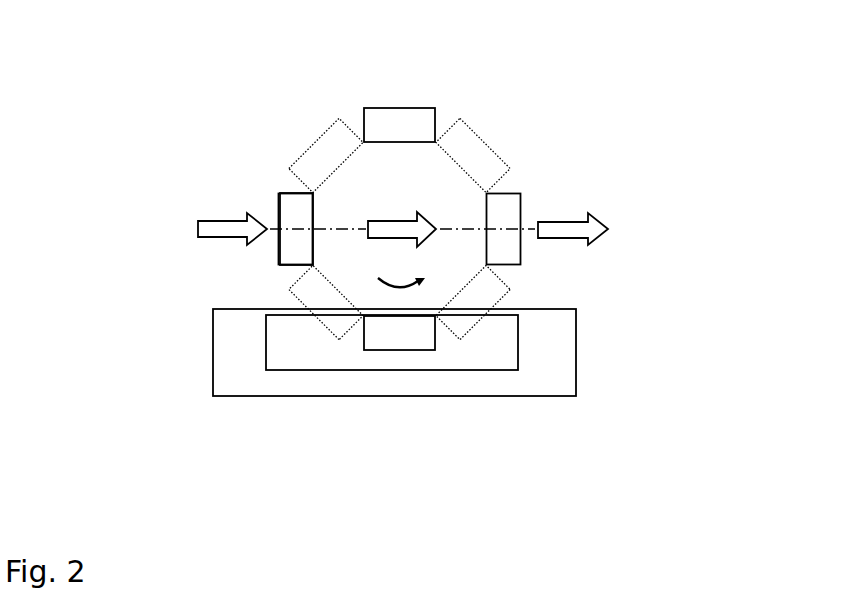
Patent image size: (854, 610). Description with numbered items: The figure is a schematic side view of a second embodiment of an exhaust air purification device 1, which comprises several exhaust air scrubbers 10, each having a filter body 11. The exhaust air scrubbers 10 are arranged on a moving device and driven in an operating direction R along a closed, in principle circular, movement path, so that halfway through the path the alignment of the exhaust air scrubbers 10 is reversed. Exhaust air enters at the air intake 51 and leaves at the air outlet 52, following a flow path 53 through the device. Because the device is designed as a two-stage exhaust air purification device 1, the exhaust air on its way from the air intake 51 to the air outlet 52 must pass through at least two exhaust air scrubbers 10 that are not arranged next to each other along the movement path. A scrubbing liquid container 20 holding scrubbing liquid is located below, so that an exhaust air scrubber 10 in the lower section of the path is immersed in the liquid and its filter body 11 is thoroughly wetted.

The exhaust air purification device 1 is at (212, 152).
The exhaust air scrubber 10 is at (423, 117).
The filter body 11 is at (308, 222).
The scrubbing liquid container 20 is at (507, 350).
The air intake 51 is at (212, 229).
The air outlet 52 is at (591, 229).
The flow path 53 is at (402, 214).